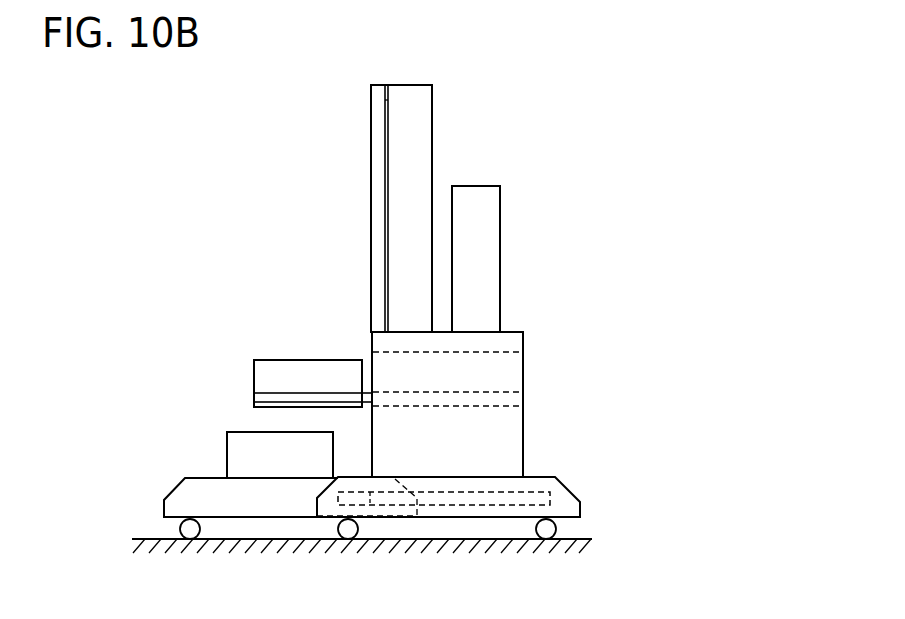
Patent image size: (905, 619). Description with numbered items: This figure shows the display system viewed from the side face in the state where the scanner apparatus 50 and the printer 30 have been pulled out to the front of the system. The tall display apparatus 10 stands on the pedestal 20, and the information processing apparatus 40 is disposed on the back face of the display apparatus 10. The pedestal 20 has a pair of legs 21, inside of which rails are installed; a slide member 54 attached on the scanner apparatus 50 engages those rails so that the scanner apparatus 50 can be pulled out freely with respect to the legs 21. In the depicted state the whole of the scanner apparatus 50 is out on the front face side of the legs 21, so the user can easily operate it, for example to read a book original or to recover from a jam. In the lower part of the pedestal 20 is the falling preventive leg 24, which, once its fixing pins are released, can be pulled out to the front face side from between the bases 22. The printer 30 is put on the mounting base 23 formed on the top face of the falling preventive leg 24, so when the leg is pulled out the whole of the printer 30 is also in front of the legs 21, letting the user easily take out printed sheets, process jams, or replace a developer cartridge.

The display apparatus 10 is at (366, 82).
The pedestal 20 is at (475, 424).
The legs 21 is at (523, 367).
The bases 22 is at (581, 506).
The mounting base 23 is at (205, 478).
The falling preventive leg 24 is at (163, 493).
The printer 30 is at (227, 443).
The information processing apparatus 40 is at (484, 186).
The scanner apparatus 50 is at (305, 360).
The slide member 54 is at (262, 399).